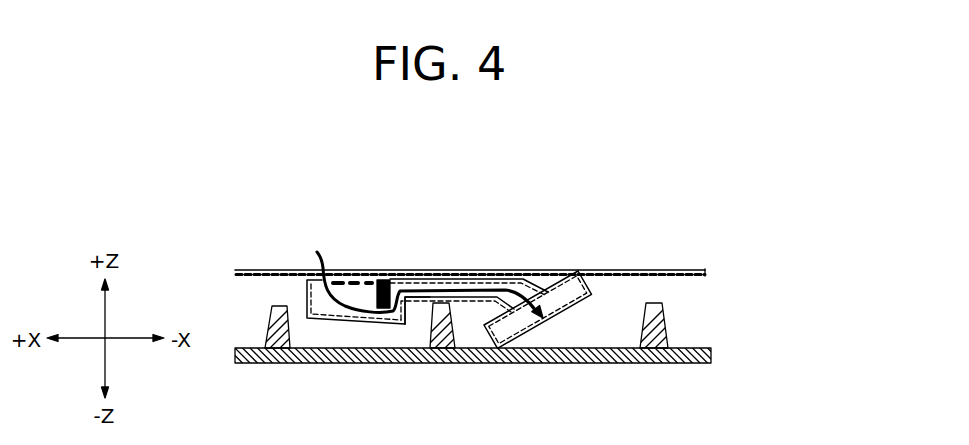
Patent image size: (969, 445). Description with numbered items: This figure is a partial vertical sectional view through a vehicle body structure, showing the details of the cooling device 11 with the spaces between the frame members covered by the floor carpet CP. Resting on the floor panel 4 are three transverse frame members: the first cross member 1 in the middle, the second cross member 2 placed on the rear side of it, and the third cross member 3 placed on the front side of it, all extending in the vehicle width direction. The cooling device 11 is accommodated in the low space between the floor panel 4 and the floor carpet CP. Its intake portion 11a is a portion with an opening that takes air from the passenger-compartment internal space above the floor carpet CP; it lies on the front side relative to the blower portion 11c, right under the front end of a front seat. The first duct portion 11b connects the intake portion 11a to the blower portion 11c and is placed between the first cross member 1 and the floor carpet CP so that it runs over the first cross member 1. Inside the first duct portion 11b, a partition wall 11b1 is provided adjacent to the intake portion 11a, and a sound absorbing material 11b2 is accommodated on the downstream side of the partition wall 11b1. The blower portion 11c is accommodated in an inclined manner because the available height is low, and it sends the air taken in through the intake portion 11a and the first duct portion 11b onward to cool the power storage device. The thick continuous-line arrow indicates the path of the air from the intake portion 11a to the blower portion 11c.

The first cross member 1 is at (433, 331).
The second cross member 2 is at (668, 331).
The third cross member 3 is at (265, 331).
The floor panel 4 is at (707, 356).
The floor carpet CP is at (705, 273).
The cooling device 11 is at (647, 195).
The intake portion 11a is at (350, 278).
The first duct portion 11b is at (396, 312).
The partition wall 11b1 is at (376, 287).
The sound absorbing material 11b2 is at (402, 322).
The blower portion 11c is at (576, 296).